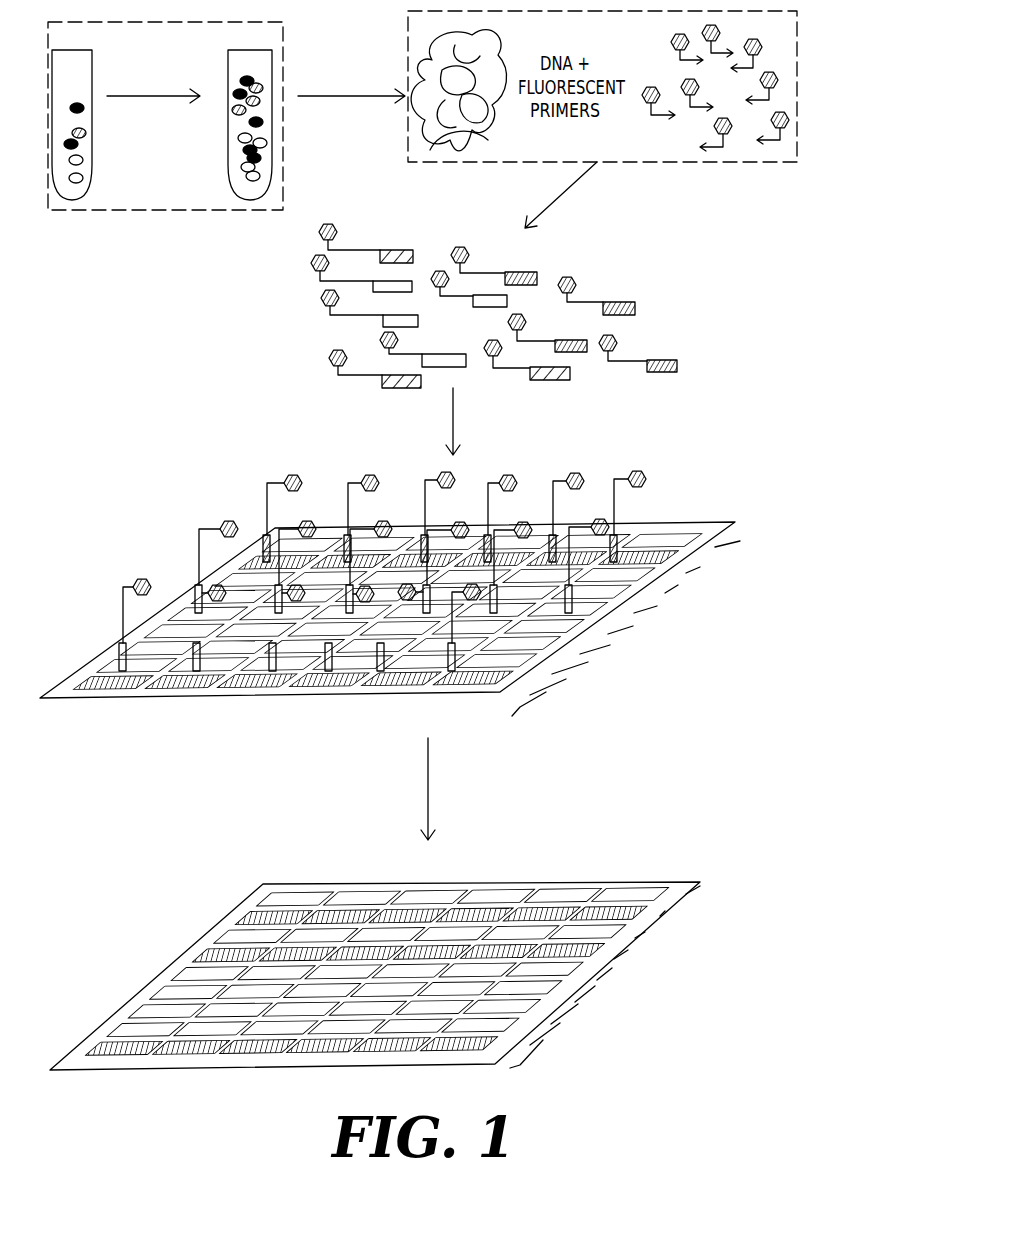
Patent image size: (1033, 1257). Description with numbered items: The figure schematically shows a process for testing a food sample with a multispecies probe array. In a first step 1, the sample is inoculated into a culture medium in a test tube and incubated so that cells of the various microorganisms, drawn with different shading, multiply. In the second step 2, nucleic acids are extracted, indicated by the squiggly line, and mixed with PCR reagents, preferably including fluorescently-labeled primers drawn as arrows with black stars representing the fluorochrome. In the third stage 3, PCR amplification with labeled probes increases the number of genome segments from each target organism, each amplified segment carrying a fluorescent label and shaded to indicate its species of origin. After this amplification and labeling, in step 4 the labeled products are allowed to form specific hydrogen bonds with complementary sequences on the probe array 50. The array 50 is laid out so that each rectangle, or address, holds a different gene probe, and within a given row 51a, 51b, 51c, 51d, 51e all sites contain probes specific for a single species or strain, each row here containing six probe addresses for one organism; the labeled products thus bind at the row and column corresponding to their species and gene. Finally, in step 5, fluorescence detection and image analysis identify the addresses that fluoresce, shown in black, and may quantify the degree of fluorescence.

The first step 1 is at (159, 109).
The second step 2 is at (351, 116).
The third stage 3 is at (603, 195).
The hybridization step 4 is at (561, 421).
The fluorescence detection and image analysis step 5 is at (547, 789).
The probe array 50 is at (434, 771).
The row 51a is at (243, 893).
The row 51b is at (238, 913).
The non-hybridized probe row 51c is at (222, 933).
The hybridized probe row 51d is at (178, 956).
The non-hybridized probe row 51e is at (165, 975).